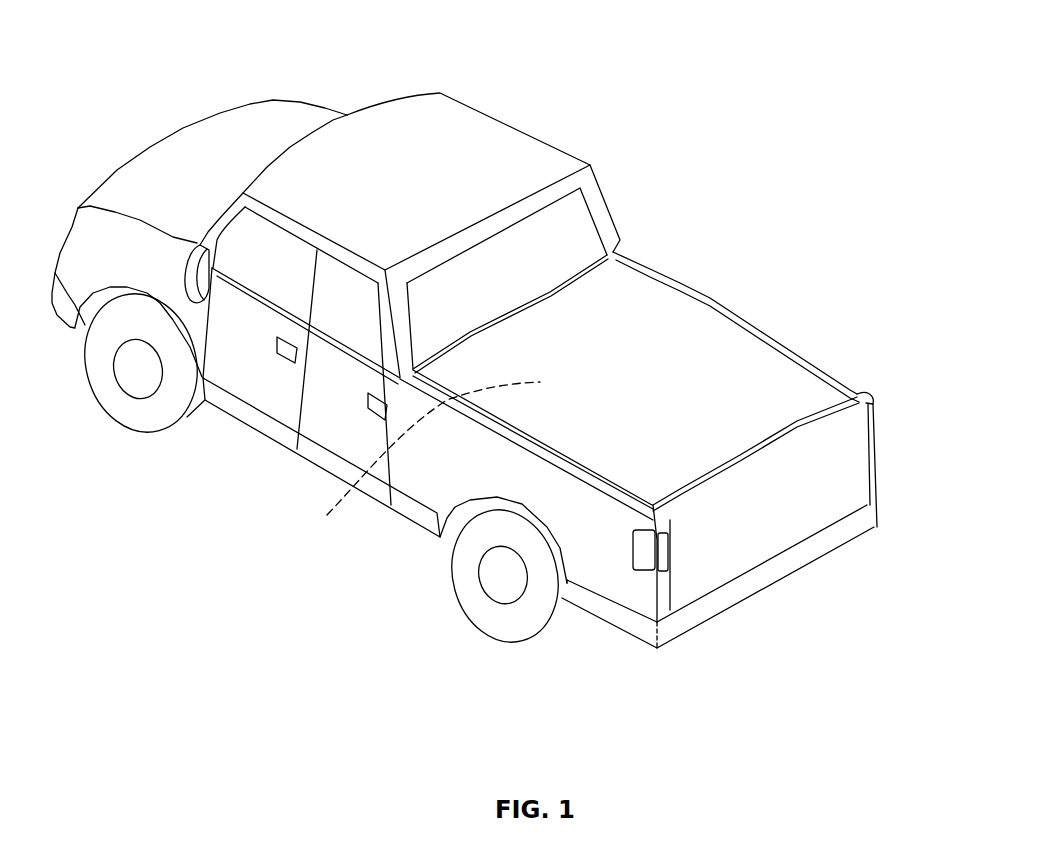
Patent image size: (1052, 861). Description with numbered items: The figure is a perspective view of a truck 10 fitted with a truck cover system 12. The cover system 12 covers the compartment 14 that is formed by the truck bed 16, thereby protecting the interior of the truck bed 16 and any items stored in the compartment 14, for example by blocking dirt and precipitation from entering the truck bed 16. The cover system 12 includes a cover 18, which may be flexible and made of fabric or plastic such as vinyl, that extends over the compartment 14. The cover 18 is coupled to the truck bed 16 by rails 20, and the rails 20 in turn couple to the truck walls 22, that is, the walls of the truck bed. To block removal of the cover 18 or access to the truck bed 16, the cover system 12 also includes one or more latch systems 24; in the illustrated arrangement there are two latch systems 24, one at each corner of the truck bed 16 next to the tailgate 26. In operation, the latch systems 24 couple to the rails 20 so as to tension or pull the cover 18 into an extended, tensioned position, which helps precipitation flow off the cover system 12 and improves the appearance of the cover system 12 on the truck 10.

The truck 10 is at (90, 112).
The truck cover system 12 is at (898, 534).
The compartment 14 is at (419, 463).
The truck bed 16 is at (687, 168).
The cover 18 is at (699, 314).
The rails 20 is at (770, 340).
The truck walls 22 is at (607, 578).
The latch systems 24 is at (899, 411).
The tailgate 26 is at (767, 523).